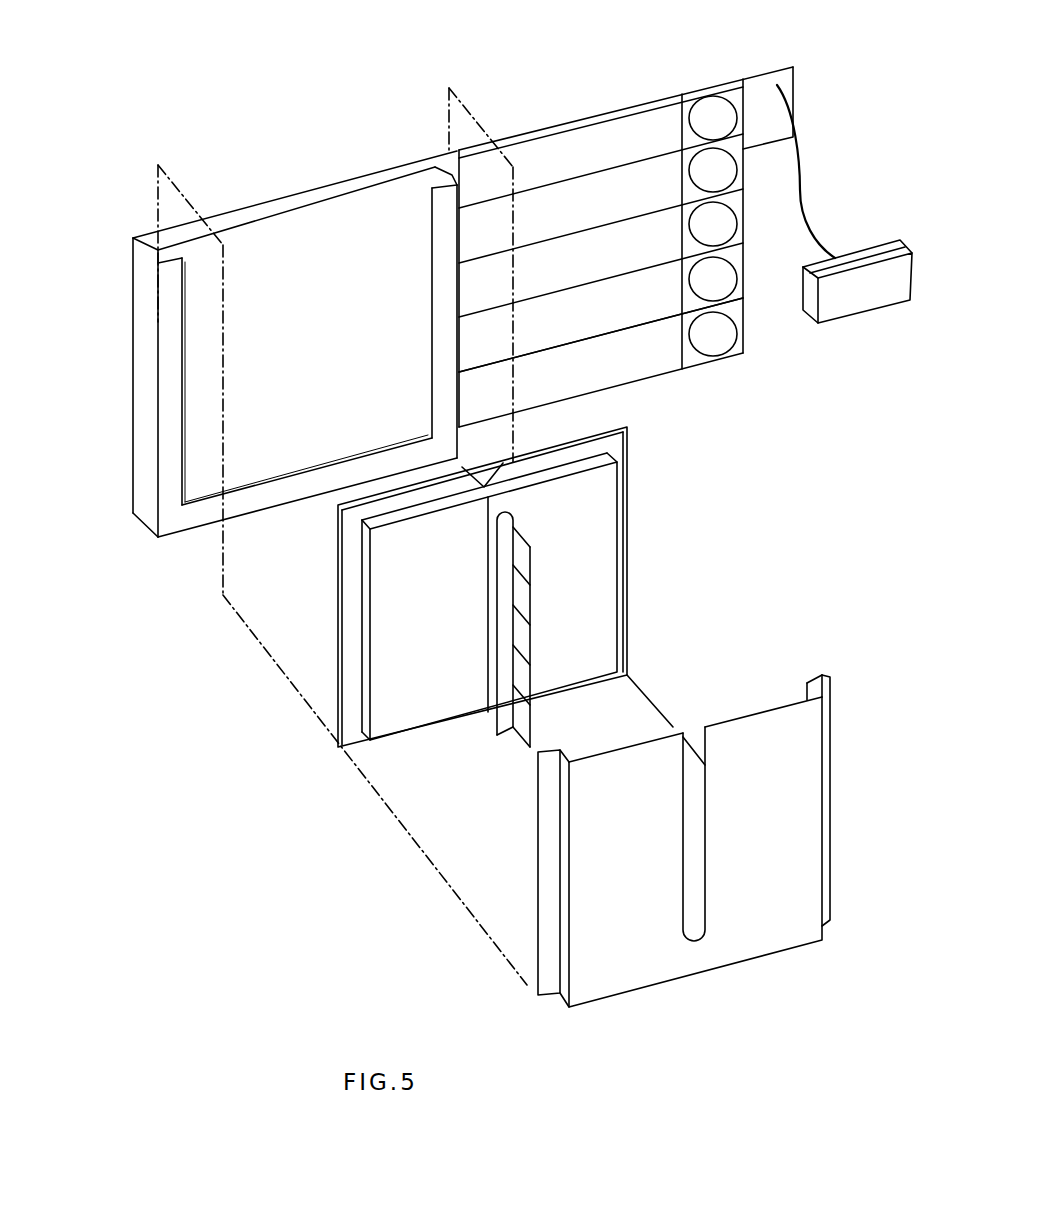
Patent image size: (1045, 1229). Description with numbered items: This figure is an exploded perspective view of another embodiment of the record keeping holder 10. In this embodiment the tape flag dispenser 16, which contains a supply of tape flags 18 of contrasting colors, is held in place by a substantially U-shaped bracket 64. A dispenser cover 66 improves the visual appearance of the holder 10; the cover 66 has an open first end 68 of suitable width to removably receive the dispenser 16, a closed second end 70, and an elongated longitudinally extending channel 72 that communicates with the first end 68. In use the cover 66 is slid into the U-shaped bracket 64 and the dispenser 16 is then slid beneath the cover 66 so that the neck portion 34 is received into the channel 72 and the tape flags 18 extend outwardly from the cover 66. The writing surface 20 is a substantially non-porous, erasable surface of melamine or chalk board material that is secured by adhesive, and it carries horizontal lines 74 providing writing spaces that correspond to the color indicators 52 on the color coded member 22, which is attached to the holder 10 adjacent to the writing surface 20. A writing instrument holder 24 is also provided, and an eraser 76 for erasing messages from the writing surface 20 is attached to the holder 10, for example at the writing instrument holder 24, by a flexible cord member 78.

The record keeping holder 10 is at (277, 134).
The tape flag dispenser 16 is at (639, 598).
The tape flags 18 is at (504, 739).
The writing surface 20 is at (574, 150).
The color coded member 22 is at (744, 218).
The writing instrument holder 24 is at (762, 86).
The neck portion 34 is at (492, 682).
The color indicators 52 is at (713, 107).
The U-shaped bracket 64 is at (142, 427).
The dispenser cover 66 is at (735, 846).
The first end 68 is at (768, 700).
The second end 70 is at (614, 1006).
The channel 72 is at (695, 956).
The horizontal lines 74 is at (603, 345).
The eraser 76 is at (866, 290).
The flexible cord member 78 is at (808, 206).